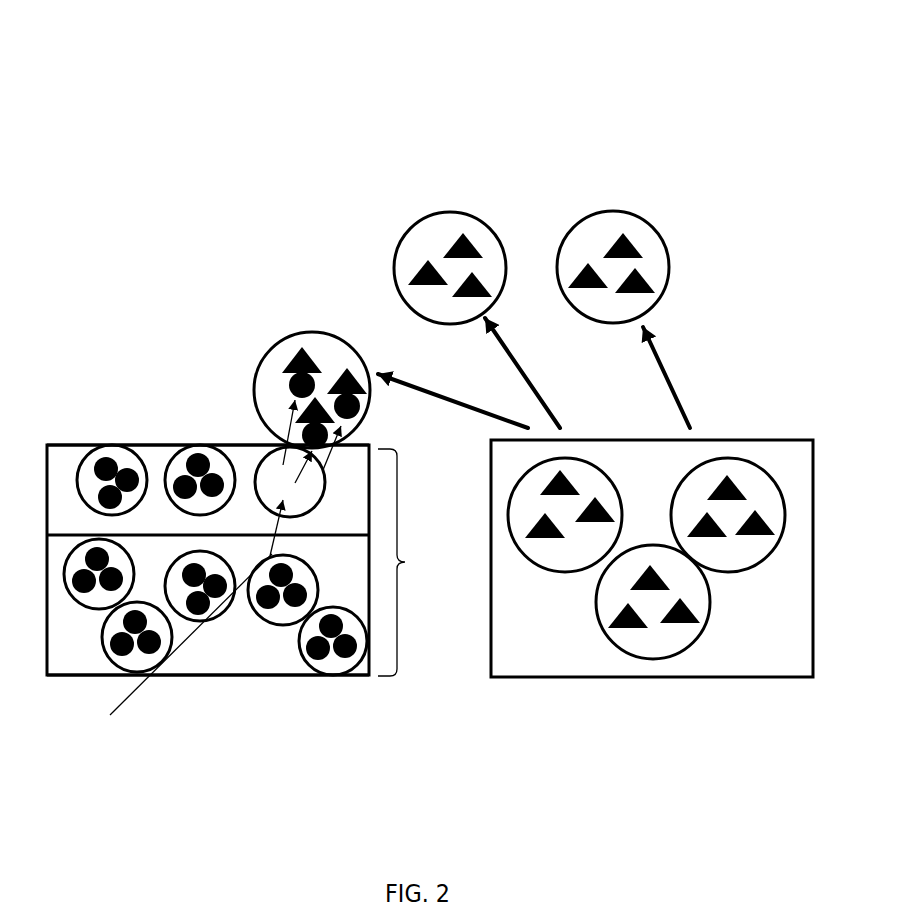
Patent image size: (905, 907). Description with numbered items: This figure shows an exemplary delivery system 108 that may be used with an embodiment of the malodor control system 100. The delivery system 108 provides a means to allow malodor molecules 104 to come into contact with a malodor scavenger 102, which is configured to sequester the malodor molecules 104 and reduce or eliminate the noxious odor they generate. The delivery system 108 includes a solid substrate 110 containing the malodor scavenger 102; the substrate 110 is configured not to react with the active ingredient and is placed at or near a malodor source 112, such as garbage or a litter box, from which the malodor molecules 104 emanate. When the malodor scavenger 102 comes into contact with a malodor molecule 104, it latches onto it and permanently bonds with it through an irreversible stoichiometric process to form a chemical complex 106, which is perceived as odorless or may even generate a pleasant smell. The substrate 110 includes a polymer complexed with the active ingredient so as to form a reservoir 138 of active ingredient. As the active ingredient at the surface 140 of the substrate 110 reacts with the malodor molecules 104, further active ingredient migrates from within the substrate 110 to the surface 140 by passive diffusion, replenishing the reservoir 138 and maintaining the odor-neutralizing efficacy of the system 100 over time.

The malodor control system 100 is at (182, 88).
The malodor scavenger 102 is at (180, 556).
The malodor molecule 104 is at (493, 230).
The chemical complex 106 is at (262, 366).
The delivery system 108 is at (93, 308).
The substrate 110 is at (405, 562).
The malodor source 112 is at (563, 657).
The reservoir 138 is at (63, 498).
The surface 140 is at (97, 442).